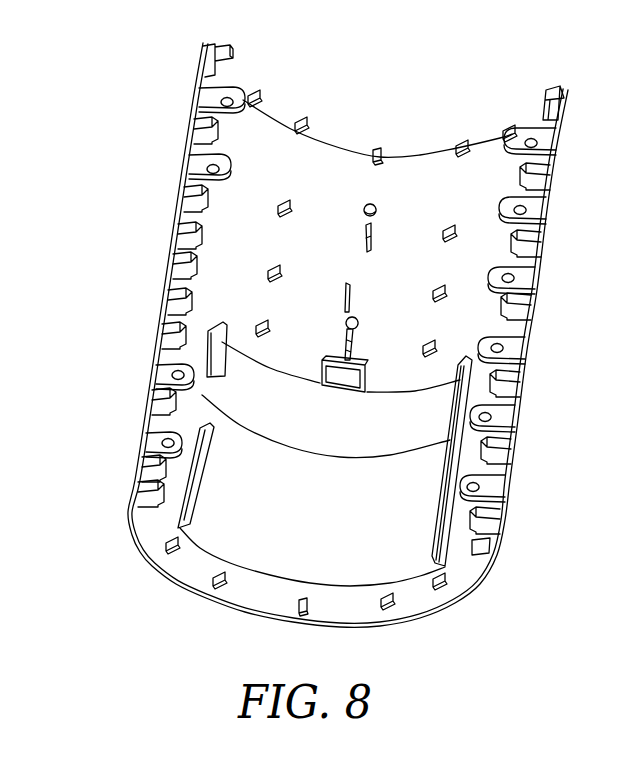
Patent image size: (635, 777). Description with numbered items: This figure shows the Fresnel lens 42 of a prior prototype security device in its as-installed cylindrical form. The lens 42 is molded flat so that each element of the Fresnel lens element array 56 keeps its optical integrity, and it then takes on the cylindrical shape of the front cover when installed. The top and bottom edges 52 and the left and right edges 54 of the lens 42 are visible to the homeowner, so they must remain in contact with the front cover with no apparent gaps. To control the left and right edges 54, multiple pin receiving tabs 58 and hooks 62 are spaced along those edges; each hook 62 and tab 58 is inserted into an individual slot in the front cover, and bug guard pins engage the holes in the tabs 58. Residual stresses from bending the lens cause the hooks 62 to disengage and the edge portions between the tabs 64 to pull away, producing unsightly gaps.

The lens 42 is at (104, 49).
The top and bottom edges of the lens 52 is at (347, 147).
The left and right edges of the lens 54 is at (201, 60).
The array of Fresnel lens elements 56 is at (357, 530).
The pin receiving tabs 58 is at (212, 97).
The hooks 62 is at (150, 406).
The tabs 64 is at (148, 360).